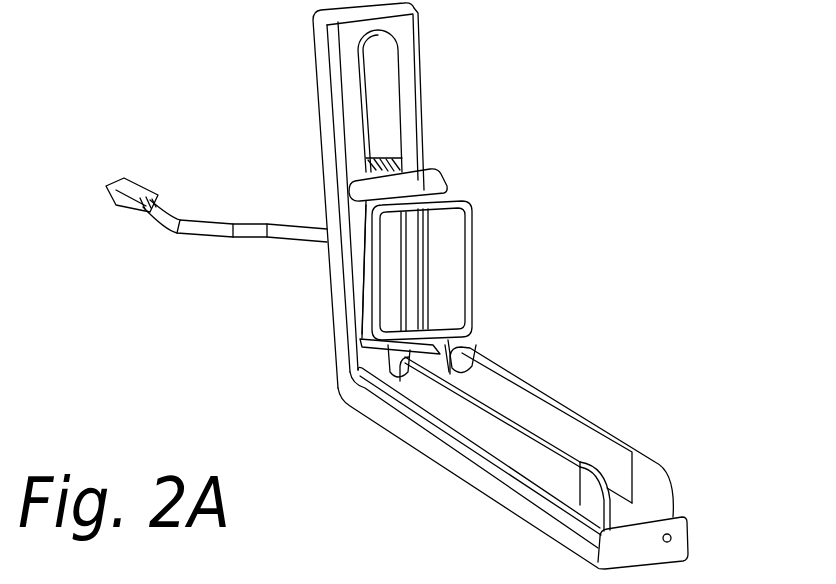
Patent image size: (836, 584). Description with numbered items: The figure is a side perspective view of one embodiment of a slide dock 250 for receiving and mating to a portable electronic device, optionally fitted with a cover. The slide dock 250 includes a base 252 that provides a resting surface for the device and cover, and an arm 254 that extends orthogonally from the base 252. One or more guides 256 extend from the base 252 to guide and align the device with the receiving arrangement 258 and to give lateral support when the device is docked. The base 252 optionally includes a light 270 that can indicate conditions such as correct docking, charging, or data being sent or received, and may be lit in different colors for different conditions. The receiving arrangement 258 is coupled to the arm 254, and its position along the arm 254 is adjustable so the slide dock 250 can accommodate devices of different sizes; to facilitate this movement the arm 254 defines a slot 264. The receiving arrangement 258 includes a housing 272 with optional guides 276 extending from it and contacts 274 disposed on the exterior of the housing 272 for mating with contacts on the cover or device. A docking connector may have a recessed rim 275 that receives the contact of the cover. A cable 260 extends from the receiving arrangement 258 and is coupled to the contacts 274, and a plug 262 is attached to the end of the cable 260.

The slide dock 250 is at (529, 75).
The base 252 is at (410, 450).
The arm 254 is at (320, 100).
The guides 256 is at (583, 417).
The receiving arrangement 258 is at (437, 176).
The cable 260 is at (218, 223).
The plug 262 is at (135, 190).
The slot 264 is at (373, 85).
The light 270 is at (673, 540).
The housing 272 is at (367, 272).
The contacts 274 is at (427, 283).
The recessed rim 275 is at (427, 317).
The guides 276 is at (467, 270).